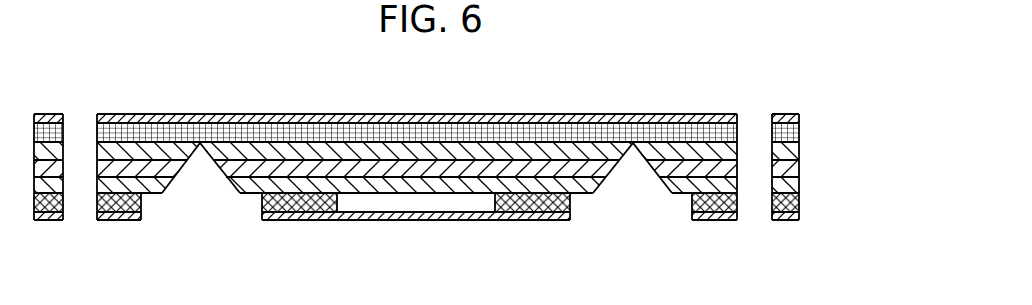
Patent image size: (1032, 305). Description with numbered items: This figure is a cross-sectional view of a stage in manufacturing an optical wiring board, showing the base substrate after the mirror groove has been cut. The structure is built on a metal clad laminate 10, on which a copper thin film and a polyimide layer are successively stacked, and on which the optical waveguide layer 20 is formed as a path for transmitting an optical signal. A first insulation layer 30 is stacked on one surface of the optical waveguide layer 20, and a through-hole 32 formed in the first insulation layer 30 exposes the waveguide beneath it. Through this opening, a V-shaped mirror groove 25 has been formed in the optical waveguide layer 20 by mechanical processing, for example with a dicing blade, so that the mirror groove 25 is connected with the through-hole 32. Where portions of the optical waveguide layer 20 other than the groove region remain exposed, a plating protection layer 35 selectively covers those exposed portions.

The metal clad laminate 10 is at (808, 128).
The optical waveguide layer 20 is at (808, 167).
The mirror groove 25 is at (658, 177).
The first insulation layer 30 is at (802, 203).
The through-hole 32 is at (757, 120).
The plating protection layer 35 is at (802, 217).